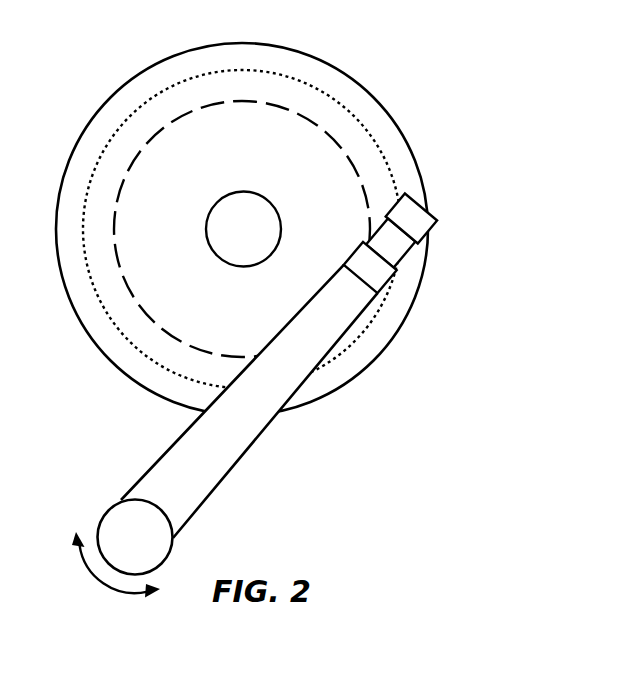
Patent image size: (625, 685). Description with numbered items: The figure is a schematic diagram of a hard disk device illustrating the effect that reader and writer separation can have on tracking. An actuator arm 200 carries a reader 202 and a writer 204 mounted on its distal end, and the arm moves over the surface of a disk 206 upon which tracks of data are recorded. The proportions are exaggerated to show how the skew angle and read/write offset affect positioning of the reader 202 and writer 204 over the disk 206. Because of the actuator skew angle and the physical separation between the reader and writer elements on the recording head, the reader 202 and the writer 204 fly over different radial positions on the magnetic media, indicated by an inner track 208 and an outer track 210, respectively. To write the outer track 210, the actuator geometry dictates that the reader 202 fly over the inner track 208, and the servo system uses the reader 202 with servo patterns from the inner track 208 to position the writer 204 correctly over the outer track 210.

The actuator arm 200 is at (252, 443).
The reader 202 is at (397, 270).
The writer 204 is at (430, 213).
The disk 206 is at (358, 82).
The inner track 208 is at (212, 105).
The outer track 210 is at (200, 72).